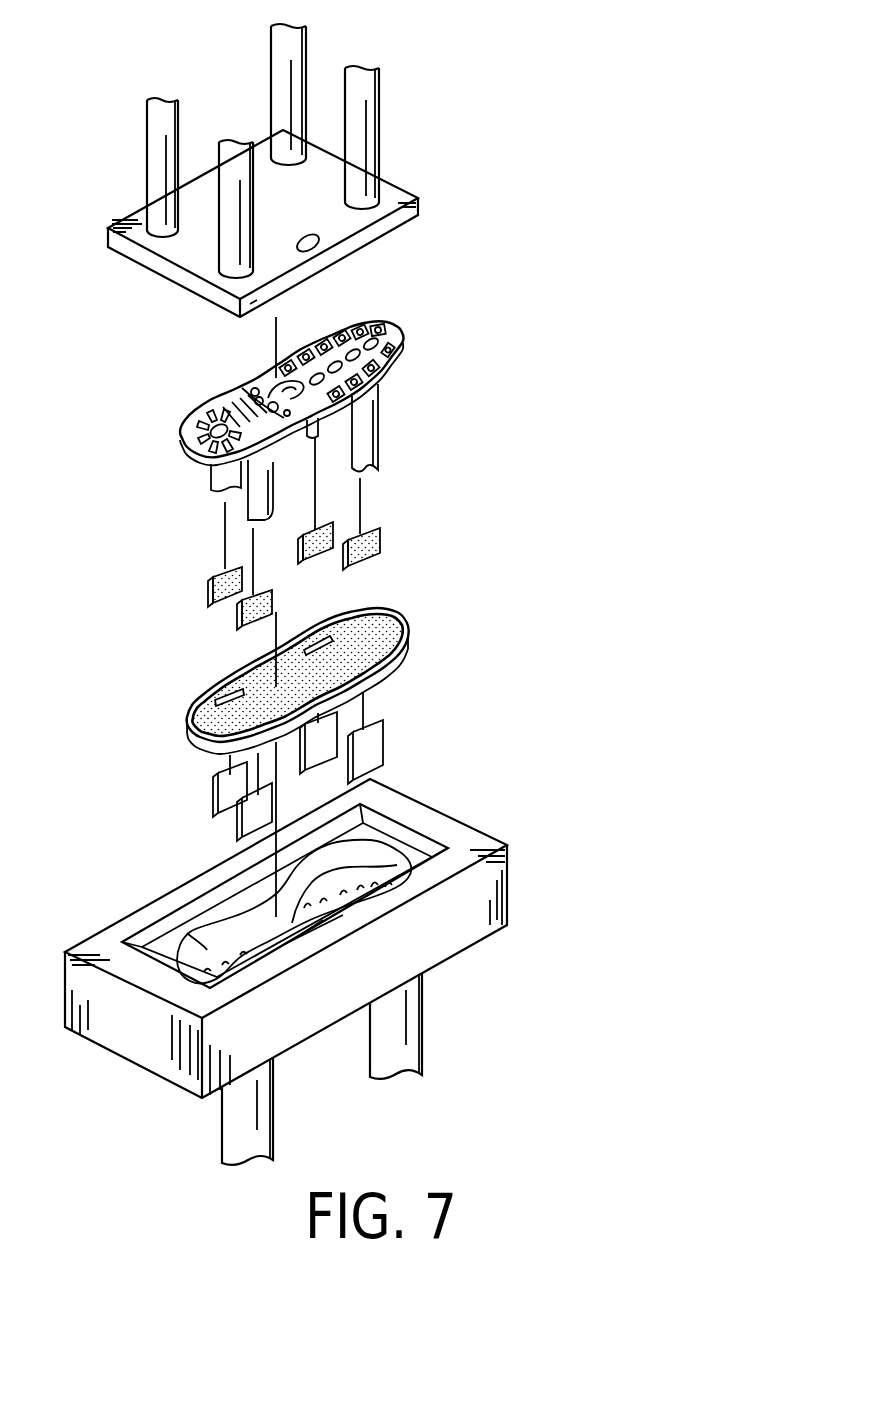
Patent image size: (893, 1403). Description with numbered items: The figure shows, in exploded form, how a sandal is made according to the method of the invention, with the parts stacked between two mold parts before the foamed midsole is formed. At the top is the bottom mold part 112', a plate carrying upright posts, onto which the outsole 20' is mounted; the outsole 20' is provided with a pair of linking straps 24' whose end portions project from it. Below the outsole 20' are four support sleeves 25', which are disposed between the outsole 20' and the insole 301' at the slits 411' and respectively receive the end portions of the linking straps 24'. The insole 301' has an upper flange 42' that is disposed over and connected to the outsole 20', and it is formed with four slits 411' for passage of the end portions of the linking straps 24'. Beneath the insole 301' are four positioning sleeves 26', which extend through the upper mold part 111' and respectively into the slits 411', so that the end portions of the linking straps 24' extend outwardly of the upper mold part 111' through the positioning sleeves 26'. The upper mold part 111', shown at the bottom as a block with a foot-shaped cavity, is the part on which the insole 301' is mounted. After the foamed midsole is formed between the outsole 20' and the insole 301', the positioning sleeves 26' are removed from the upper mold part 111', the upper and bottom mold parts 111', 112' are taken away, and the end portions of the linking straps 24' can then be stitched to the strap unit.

The bottom mold part 112' is at (327, 470).
The outsole 20' is at (380, 360).
The linking straps 24' is at (299, 452).
The support sleeves 25' is at (352, 533).
The insole 301' is at (259, 681).
The slits 411' is at (222, 671).
The upper flange 42' is at (347, 675).
The positioning sleeves 26' is at (254, 767).
The upper mold part 111' is at (360, 972).